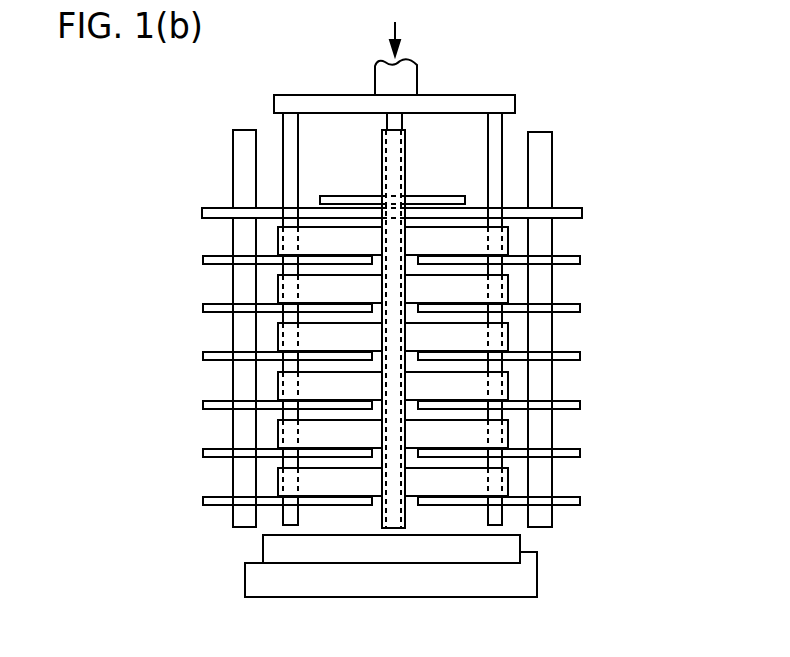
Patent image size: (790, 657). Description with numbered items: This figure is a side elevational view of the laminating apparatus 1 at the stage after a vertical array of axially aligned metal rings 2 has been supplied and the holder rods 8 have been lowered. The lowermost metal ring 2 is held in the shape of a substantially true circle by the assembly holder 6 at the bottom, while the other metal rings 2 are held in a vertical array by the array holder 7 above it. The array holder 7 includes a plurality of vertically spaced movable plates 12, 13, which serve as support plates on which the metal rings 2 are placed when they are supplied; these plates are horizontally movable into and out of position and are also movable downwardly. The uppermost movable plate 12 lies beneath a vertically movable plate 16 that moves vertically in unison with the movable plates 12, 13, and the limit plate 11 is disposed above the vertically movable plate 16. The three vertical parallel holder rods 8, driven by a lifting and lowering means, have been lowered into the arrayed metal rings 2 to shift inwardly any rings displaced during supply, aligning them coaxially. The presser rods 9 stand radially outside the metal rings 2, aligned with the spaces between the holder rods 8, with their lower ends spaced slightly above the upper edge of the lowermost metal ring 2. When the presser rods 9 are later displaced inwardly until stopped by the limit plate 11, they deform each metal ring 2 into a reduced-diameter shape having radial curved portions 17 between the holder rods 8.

The laminating apparatus 1 is at (684, 82).
The metal ring 2 is at (290, 243).
The assembly holder 6 is at (460, 576).
The array holder 7 is at (442, 333).
The holder rod 8 is at (297, 136).
The presser rod 9 is at (247, 155).
The limit plate 11 is at (361, 196).
The movable plate 12 is at (203, 258).
The lowermost movable plate 13 is at (203, 501).
The vertically movable plate 16 is at (560, 210).
The radial curved portion 17 is at (510, 242).